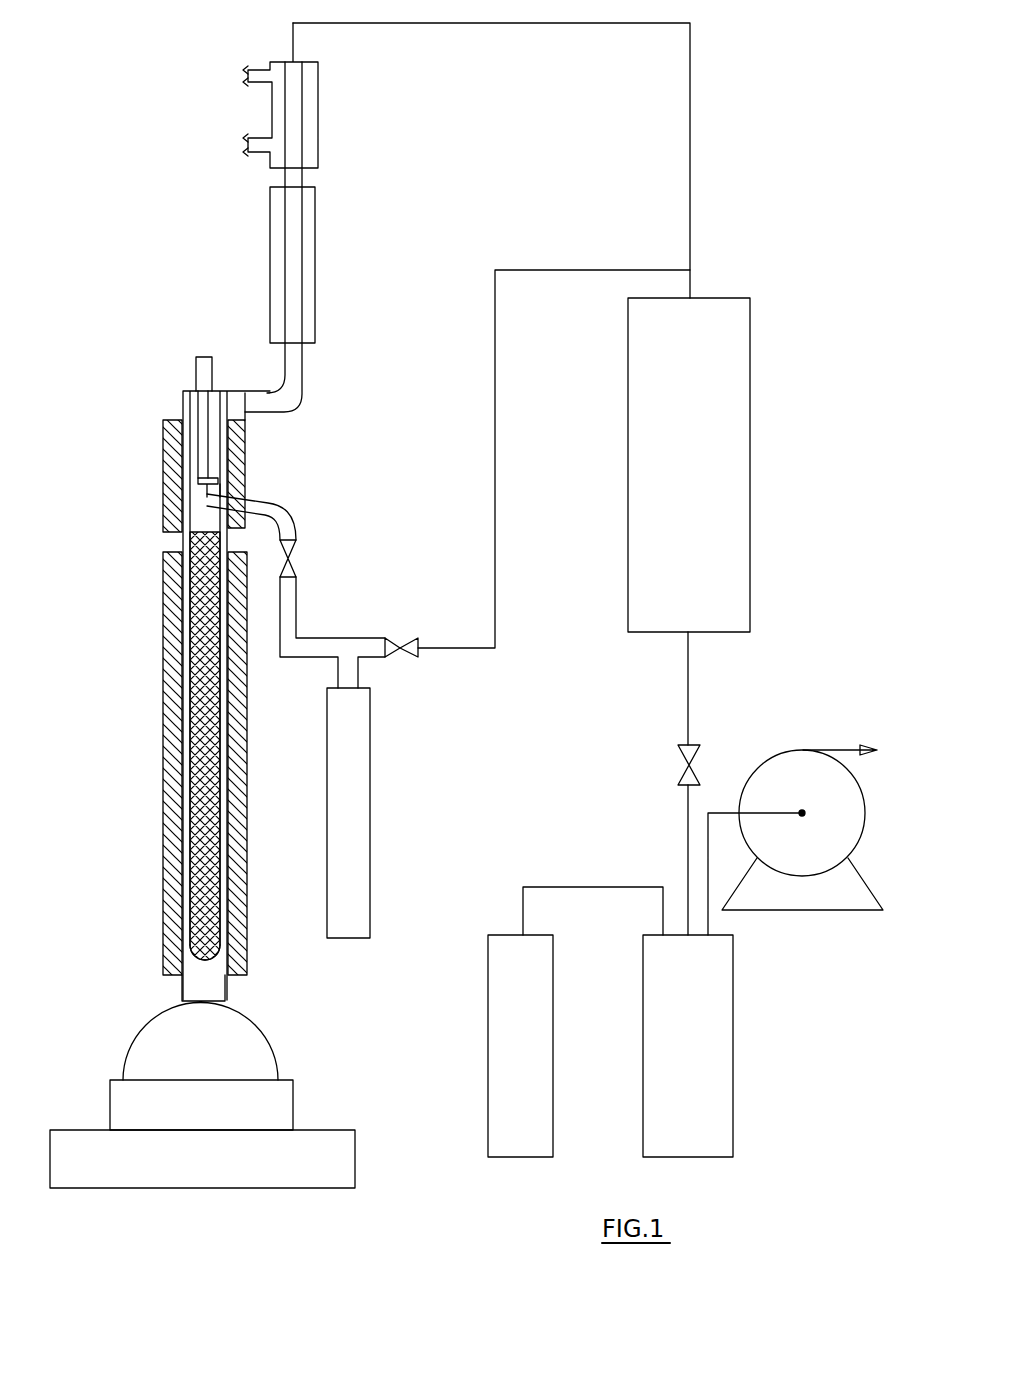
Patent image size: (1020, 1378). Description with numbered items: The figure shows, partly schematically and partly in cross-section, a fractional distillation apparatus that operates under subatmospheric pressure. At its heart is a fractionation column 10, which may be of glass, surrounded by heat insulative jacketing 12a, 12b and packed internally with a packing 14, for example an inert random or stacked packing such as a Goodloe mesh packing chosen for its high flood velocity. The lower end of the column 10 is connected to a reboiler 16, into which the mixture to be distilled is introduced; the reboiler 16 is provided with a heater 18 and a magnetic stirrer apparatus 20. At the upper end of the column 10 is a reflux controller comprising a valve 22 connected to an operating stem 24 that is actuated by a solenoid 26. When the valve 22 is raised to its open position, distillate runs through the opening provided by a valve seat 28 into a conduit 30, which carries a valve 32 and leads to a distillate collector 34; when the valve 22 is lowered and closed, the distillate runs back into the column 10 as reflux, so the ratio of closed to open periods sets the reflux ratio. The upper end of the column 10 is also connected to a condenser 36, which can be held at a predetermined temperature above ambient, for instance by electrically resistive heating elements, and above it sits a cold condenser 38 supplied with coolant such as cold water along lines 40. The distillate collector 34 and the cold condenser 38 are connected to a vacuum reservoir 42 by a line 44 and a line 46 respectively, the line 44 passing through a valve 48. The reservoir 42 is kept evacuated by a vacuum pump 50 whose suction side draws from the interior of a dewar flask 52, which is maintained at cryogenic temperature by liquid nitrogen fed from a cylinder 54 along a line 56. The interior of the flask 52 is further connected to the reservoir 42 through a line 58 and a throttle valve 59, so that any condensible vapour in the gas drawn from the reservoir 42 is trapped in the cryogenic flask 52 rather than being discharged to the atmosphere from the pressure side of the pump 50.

The fractionation column 10 is at (185, 785).
The heat insulative jacketing 12a is at (170, 705).
The heat insulative jacketing 12b is at (170, 445).
The packing 14 is at (200, 748).
The reboiler 16 is at (265, 1037).
The heater 18 is at (285, 1108).
The magnetic stirrer apparatus 20 is at (355, 1152).
The valve 22 is at (222, 465).
The operating stem 24 is at (237, 425).
The solenoid 26 is at (198, 385).
The valve seat 28 is at (225, 488).
The conduit 30 is at (290, 513).
The valve 32 is at (292, 555).
The distillate collector 34 is at (370, 718).
The condenser 36 is at (318, 272).
The cold condenser 38 is at (318, 132).
The lines 40 is at (262, 68).
The vacuum reservoir 42 is at (628, 503).
The line 44 is at (495, 520).
The line 46 is at (690, 138).
The valve 48 is at (400, 642).
The vacuum pump 50 is at (773, 762).
The dewar flask 52 is at (737, 1058).
The cylinder 54 is at (547, 1057).
The line 56 is at (592, 887).
The line 58 is at (688, 683).
The throttle valve 59 is at (680, 752).